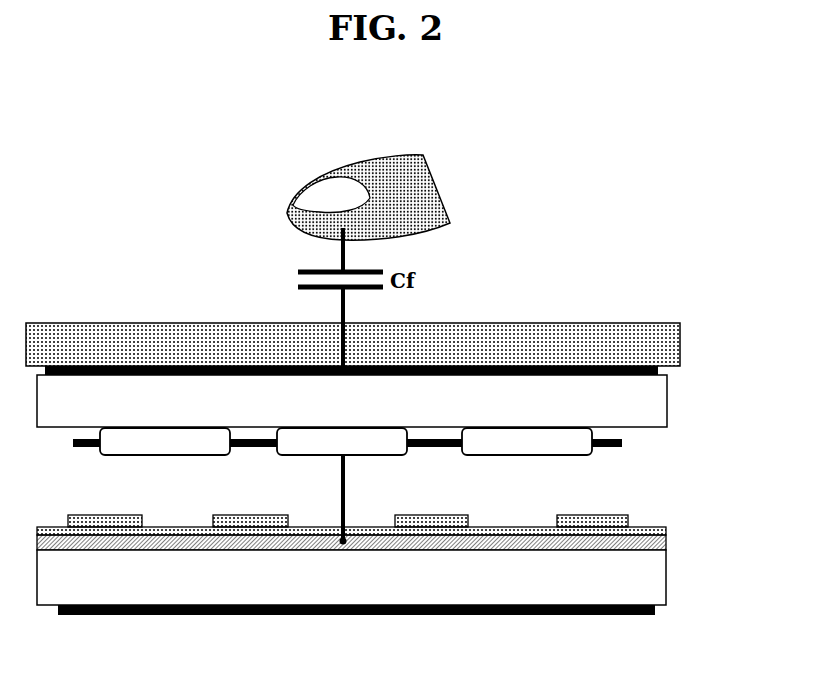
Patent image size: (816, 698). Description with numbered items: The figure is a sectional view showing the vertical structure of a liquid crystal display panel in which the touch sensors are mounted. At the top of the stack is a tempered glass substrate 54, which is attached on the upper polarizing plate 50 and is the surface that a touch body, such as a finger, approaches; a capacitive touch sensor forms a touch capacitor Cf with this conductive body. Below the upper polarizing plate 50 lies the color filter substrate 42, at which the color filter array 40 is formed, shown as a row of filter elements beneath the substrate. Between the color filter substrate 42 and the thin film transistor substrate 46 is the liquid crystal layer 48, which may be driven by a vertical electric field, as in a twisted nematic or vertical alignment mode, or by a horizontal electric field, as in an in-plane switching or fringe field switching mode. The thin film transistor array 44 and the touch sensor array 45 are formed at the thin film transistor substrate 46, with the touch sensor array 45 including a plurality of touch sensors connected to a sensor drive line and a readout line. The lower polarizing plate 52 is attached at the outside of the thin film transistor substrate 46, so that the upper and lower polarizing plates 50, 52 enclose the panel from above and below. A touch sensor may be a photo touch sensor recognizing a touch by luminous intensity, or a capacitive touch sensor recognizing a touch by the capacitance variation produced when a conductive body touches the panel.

The tempered glass substrate 54 is at (680, 330).
The upper polarizing plate 50 is at (660, 378).
The color filter substrate 42 is at (667, 427).
The color filter array 40 is at (592, 457).
The liquid crystal layer 48 is at (436, 486).
The thin film transistor array 44 is at (628, 524).
The touch sensor array 45 is at (667, 542).
The thin film transistor substrate 46 is at (667, 590).
The lower polarizing plate 52 is at (655, 613).